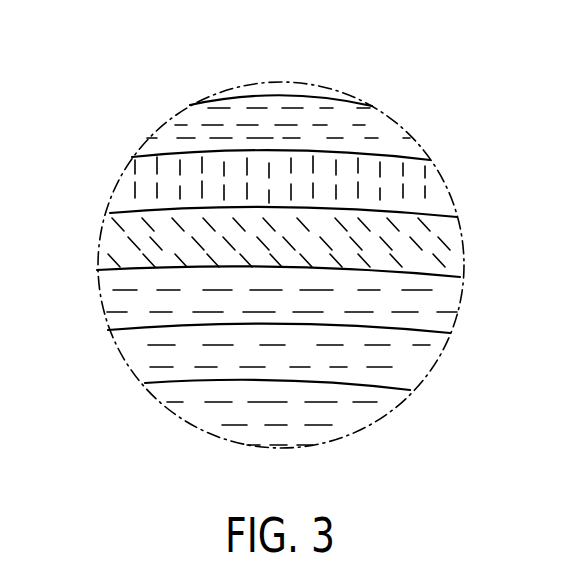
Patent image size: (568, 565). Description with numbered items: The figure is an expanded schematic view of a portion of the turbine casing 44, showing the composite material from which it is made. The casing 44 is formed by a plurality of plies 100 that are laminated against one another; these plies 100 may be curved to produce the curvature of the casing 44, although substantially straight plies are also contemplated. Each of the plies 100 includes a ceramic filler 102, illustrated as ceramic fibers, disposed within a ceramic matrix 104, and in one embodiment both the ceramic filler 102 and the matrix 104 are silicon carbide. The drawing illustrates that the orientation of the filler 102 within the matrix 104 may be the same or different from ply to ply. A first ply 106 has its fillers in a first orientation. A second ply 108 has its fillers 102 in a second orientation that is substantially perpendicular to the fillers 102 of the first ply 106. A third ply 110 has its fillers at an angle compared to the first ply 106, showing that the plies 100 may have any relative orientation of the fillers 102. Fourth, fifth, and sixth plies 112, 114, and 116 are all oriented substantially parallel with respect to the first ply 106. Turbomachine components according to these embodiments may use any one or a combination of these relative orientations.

The casing 44 is at (457, 68).
The plies 100 is at (359, 88).
The ceramic filler 102 is at (355, 127).
The ceramic matrix 104 is at (392, 134).
The first ply 106 is at (170, 121).
The second ply 108 is at (111, 196).
The third ply 110 is at (100, 244).
The fourth ply 112 is at (103, 310).
The fifth ply 114 is at (121, 358).
The sixth ply 116 is at (185, 418).